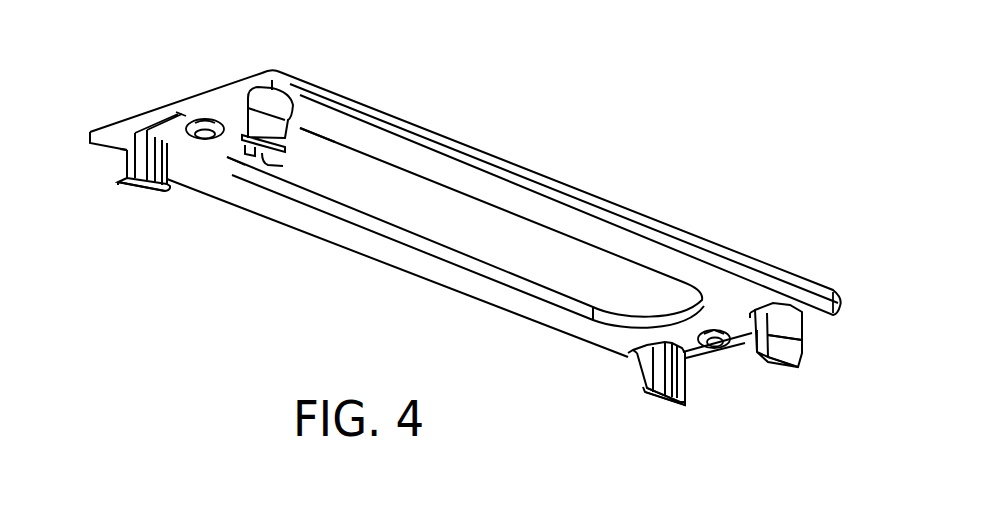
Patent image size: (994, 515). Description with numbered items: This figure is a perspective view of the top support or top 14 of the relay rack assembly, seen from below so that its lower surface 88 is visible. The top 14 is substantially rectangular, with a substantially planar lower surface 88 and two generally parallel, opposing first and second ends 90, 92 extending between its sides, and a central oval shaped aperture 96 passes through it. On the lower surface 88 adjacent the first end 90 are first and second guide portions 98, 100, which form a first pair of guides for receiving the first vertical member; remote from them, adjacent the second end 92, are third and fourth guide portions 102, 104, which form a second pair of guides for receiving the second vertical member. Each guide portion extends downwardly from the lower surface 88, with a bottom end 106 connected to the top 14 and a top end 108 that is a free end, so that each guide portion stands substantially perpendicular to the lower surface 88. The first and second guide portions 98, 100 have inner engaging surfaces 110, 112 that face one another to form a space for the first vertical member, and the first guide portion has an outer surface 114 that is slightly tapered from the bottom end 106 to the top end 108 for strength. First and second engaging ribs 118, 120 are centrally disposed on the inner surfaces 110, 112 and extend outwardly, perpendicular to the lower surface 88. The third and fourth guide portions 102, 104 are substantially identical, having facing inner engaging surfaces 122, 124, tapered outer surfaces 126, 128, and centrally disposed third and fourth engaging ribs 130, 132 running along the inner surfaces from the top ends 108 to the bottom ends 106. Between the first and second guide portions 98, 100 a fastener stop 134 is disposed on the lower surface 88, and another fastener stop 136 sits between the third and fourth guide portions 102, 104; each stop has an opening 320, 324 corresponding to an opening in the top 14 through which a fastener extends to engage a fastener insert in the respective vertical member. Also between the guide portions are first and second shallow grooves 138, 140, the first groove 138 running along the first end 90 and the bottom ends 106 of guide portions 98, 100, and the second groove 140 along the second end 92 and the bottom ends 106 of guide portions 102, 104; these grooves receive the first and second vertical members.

The top support 14 is at (556, 92).
The lower surface 88 is at (232, 195).
The first end 90 is at (181, 114).
The second end 92 is at (837, 305).
The central oval shaped aperture 96 is at (432, 241).
The first guide portion 98 is at (292, 144).
The second guide portion 100 is at (124, 183).
The third guide portion 102 is at (808, 346).
The fourth guide portion 104 is at (652, 410).
The bottom end 106 is at (246, 96).
The top end 108 is at (140, 186).
The inner engaging surface 110 is at (283, 166).
The inner engaging surface 112 is at (118, 150).
The outer surface 114 is at (274, 127).
The first engaging rib 118 is at (252, 166).
The second engaging rib 120 is at (125, 143).
The inner engaging surface 122 is at (780, 372).
The inner engaging surface 124 is at (664, 405).
The outer surface 126 is at (783, 337).
The outer surface 128 is at (645, 395).
The third engaging rib 130 is at (750, 367).
The fourth engaging rib 132 is at (688, 374).
The fastener stop 134 is at (206, 121).
The fastener stop 136 is at (720, 328).
The first shallow groove 138 is at (157, 118).
The second shallow groove 140 is at (735, 346).
The opening 320 is at (206, 140).
The opening 324 is at (700, 332).